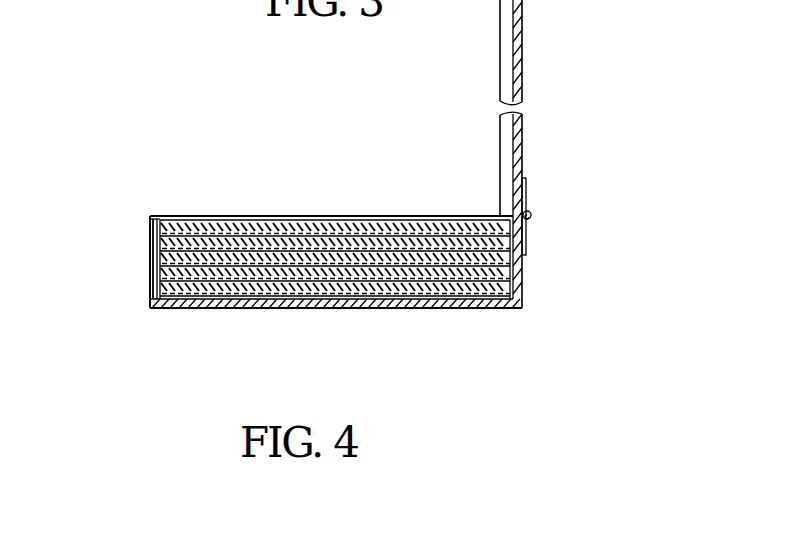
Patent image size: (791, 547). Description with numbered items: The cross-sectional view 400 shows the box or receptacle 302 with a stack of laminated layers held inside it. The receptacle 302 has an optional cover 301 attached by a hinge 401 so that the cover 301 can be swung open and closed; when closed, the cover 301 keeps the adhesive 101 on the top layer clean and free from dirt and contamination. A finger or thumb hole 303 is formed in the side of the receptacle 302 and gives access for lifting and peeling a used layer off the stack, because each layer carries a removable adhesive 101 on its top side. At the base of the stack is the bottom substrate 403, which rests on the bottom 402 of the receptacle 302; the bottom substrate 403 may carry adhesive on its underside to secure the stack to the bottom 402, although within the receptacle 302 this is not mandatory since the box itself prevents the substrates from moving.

The adhesive 101 is at (287, 218).
The cover 301 is at (522, 42).
The receptacle 302 is at (212, 218).
The finger or thumb hole 303 is at (153, 262).
The cross-sectional view 400 is at (572, 137).
The hinge 401 is at (525, 232).
The bottom of the receptacle 402 is at (457, 310).
The bottom substrate 403 is at (257, 310).